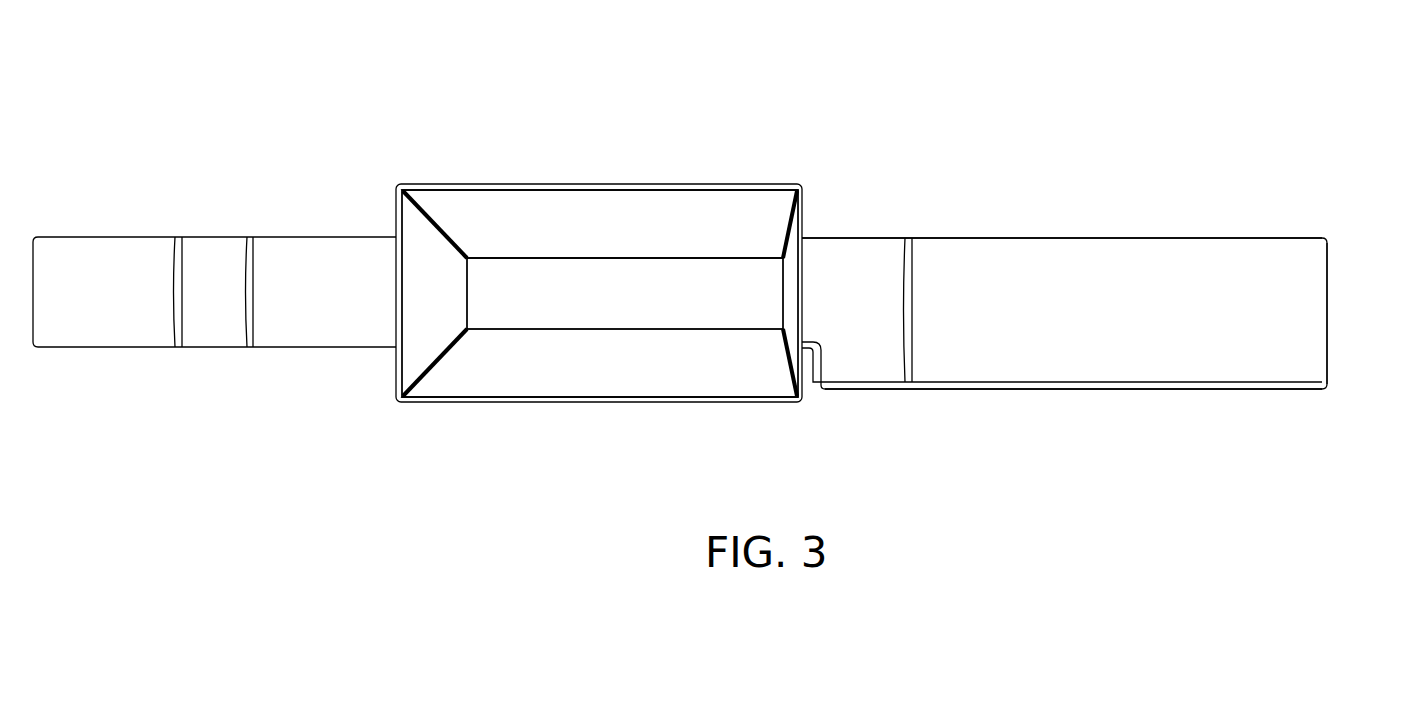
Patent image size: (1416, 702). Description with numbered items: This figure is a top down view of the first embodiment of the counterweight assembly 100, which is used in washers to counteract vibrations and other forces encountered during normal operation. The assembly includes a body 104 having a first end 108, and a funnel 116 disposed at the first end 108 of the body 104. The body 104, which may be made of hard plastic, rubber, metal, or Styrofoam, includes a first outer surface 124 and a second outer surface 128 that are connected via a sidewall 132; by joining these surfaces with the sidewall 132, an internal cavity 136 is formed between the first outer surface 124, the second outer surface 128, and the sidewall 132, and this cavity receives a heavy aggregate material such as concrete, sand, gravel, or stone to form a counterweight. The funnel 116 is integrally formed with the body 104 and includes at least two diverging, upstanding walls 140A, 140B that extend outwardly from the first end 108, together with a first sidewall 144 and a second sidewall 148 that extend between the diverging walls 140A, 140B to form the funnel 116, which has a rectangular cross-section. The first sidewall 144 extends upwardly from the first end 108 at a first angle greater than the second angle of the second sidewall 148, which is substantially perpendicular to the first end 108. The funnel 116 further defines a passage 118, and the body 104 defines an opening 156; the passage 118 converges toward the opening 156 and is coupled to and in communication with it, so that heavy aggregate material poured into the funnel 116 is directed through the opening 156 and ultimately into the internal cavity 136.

The counterweight assembly 100 is at (1256, 88).
The body 104 is at (1086, 415).
The first end 108 is at (1312, 312).
The funnel 116 is at (508, 428).
The passage 118 is at (481, 212).
The first outer surface 124 is at (1255, 390).
The second outer surface 128 is at (1222, 238).
The sidewall 132 is at (130, 303).
The internal cavity 136 is at (755, 280).
The first diverging upstanding wall 140A is at (560, 200).
The second diverging upstanding wall 140B is at (650, 397).
The first sidewall 144 is at (420, 245).
The second sidewall 148 is at (792, 238).
The opening 156 is at (657, 255).